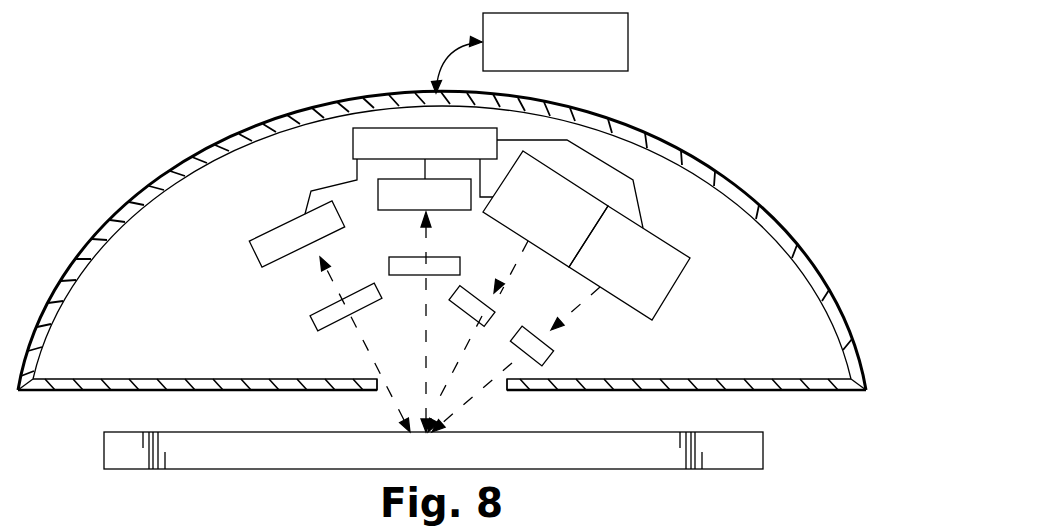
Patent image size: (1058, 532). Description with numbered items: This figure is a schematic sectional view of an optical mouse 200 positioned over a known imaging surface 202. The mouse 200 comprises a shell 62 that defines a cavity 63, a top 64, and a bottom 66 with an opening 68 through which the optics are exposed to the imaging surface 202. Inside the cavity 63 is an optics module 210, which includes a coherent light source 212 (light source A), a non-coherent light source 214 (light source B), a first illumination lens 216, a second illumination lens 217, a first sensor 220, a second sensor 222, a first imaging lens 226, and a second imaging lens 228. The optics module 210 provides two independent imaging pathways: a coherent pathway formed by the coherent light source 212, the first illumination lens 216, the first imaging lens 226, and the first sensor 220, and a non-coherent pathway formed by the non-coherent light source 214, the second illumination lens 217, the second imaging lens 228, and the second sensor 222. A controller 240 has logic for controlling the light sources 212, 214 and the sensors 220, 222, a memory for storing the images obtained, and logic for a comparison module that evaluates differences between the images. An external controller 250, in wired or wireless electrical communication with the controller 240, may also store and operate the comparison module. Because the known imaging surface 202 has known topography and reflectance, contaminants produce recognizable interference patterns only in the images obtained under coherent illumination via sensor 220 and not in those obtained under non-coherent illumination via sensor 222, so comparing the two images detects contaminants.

The shell 62 is at (842, 315).
The cavity 63 is at (786, 323).
The top 64 is at (300, 112).
The bottom 66 is at (713, 390).
The opening 68 is at (507, 390).
The optical mouse 200 is at (451, 236).
The known imaging surface 202 is at (764, 447).
The optics module 210 is at (439, 218).
The coherent light source 212 is at (541, 246).
The non-coherent light source 214 is at (651, 320).
The first illumination lens 216 is at (457, 306).
The second illumination lens 217 is at (553, 357).
The first sensor 220 is at (257, 262).
The second sensor 222 is at (378, 198).
The first imaging lens 226 is at (312, 327).
The second imaging lens 228 is at (437, 257).
The controller 240 is at (353, 145).
The external controller 250 is at (605, 13).